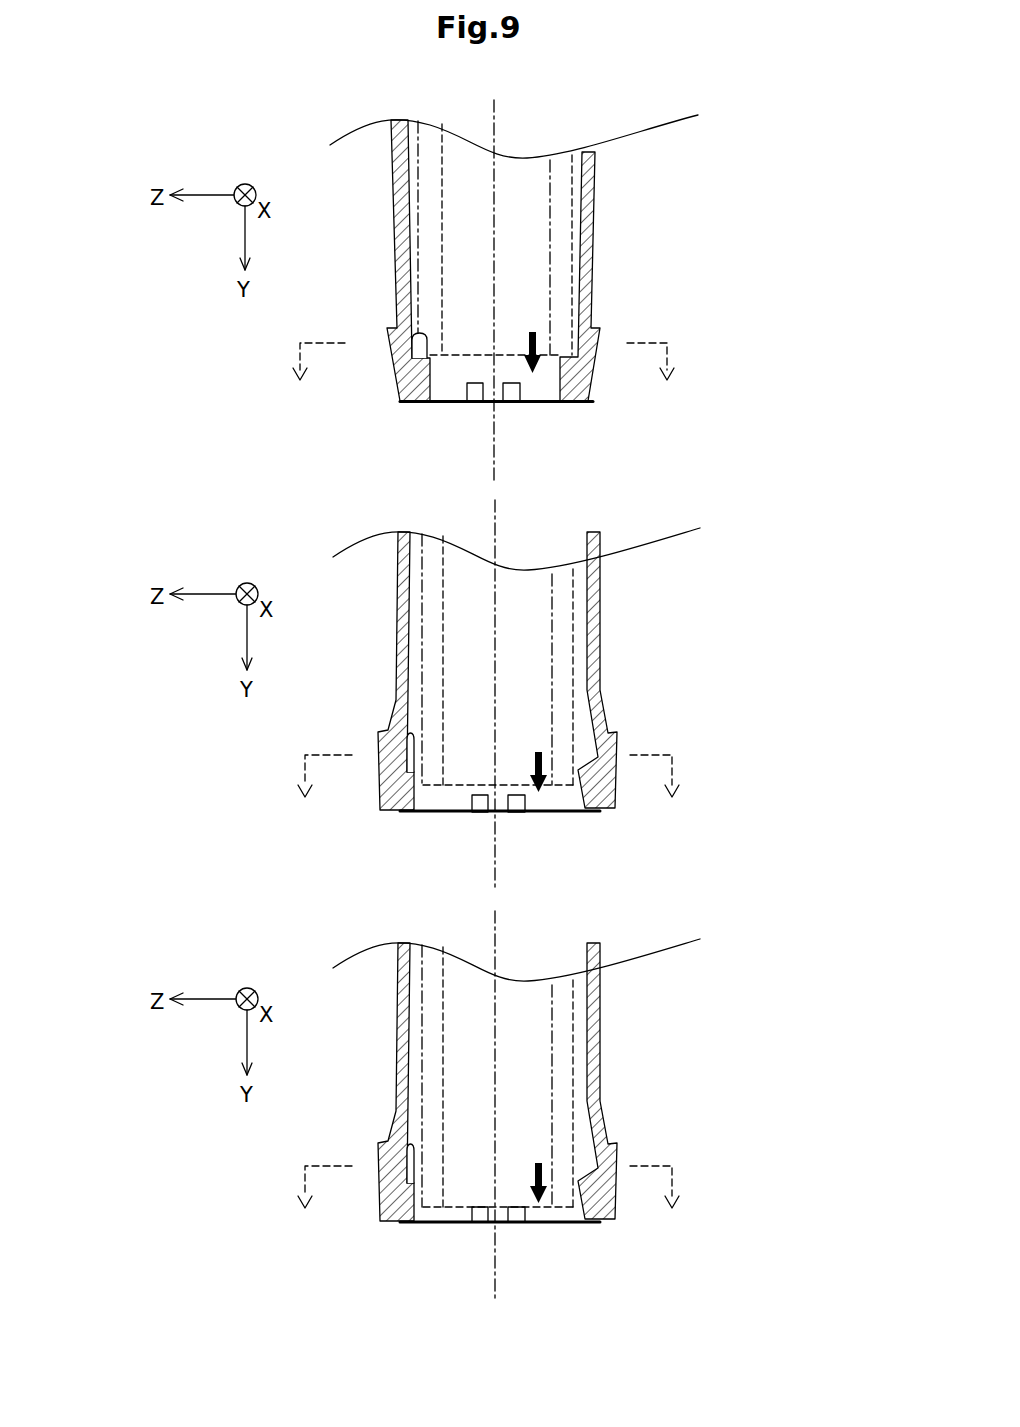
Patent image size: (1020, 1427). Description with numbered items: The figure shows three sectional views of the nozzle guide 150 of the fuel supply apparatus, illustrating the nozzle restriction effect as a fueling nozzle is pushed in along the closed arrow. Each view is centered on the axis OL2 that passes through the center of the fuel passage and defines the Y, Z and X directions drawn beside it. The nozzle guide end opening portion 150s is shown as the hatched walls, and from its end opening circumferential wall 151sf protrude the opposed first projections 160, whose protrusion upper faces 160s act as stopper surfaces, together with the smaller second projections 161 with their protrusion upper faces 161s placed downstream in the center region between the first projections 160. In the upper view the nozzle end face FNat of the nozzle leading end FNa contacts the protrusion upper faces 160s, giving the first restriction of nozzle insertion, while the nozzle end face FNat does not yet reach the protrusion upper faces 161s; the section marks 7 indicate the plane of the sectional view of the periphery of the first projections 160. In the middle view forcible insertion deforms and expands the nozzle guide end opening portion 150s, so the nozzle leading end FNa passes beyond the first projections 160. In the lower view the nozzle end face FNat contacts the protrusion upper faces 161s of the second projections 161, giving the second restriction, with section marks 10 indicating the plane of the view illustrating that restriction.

The nozzle guide 150 is at (298, 125).
The nozzle guide end opening portion 150s is at (600, 362).
The end opening circumferential wall 151sf is at (572, 350).
The first projections 160 is at (420, 376).
The protrusion upper faces 160s is at (576, 350).
The second projections 161 is at (480, 401).
The protrusion upper faces 161s is at (517, 383).
The nozzle leading end FNa is at (557, 197).
The nozzle end face FNat is at (435, 365).
The axis OL2 is at (491, 687).
The line 7-7 section indicator 7 is at (484, 380).
The line 10-10 section indicator 10 is at (487, 1000).